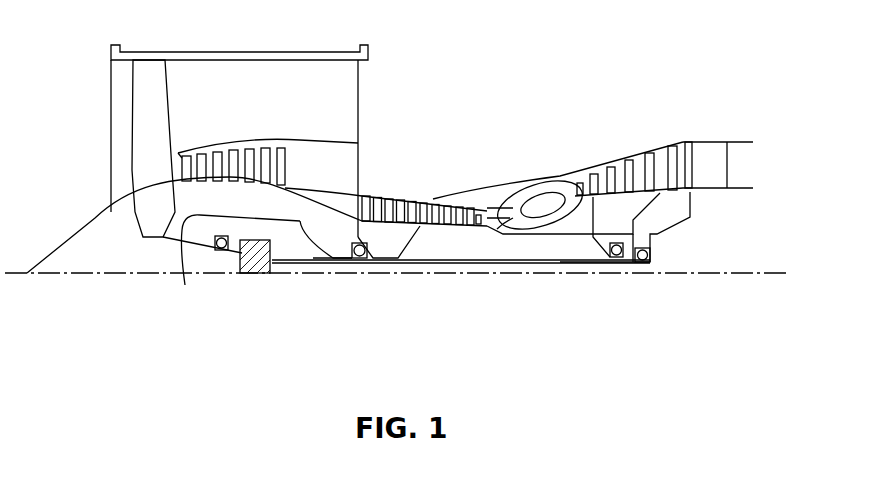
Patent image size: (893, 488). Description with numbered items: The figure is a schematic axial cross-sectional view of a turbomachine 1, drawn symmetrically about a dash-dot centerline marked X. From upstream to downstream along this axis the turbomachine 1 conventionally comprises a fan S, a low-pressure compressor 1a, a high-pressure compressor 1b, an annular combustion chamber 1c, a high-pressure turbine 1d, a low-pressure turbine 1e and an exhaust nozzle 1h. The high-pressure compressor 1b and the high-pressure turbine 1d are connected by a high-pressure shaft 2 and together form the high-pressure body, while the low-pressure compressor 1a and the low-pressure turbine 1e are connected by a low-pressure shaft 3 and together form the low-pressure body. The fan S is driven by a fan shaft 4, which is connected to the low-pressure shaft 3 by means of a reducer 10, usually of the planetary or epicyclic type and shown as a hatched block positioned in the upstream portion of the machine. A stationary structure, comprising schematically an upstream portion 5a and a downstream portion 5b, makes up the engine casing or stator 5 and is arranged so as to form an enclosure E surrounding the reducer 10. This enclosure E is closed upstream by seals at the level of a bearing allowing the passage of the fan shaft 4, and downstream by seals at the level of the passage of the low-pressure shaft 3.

The turbomachine 1 is at (470, 113).
The low-pressure compressor 1a is at (200, 156).
The high-pressure compressor 1b is at (389, 197).
The annular combustion chamber 1c is at (537, 202).
The high-pressure turbine 1d is at (593, 200).
The low-pressure turbine 1e is at (690, 153).
The exhaust nozzle 1h is at (742, 160).
The high-pressure shaft 2 is at (527, 237).
The low-pressure shaft 3 is at (440, 263).
The fan shaft 4 is at (213, 251).
The engine casing or stator 5 is at (287, 219).
The upstream portion 5a is at (185, 285).
The downstream portion 5b is at (322, 244).
The reducer 10 is at (253, 266).
The enclosure E is at (278, 222).
The fan S is at (143, 107).
The engine axis X is at (12, 273).